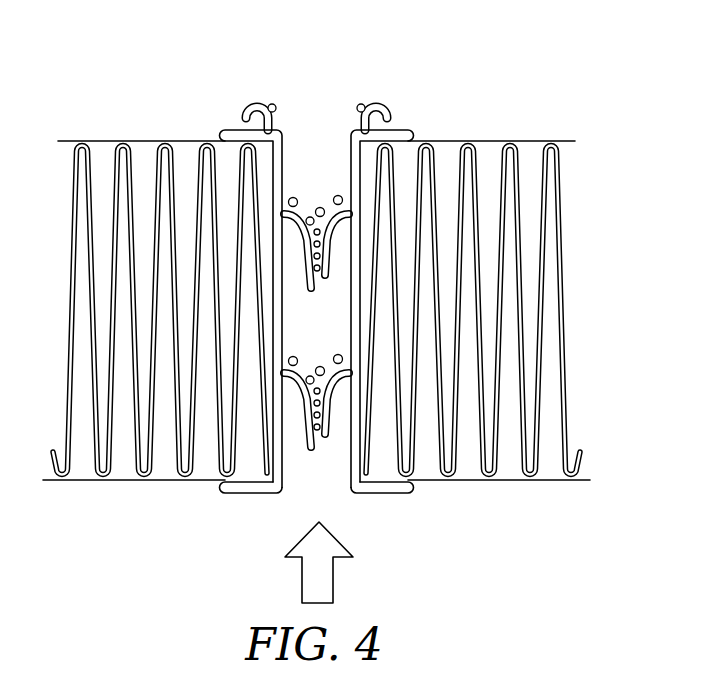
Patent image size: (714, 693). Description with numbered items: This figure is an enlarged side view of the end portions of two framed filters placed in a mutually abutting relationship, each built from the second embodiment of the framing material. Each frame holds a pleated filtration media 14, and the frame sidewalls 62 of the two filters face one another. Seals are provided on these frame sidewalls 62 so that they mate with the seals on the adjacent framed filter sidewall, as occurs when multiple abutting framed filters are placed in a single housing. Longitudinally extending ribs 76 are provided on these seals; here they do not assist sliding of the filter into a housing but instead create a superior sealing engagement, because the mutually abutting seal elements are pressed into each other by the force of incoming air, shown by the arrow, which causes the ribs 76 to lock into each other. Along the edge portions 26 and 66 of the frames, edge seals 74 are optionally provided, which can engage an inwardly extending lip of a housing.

The pleated filtration media 14 is at (163, 140).
The edge portion 26 is at (223, 131).
The frame sidewall 62 is at (287, 456).
The edge portion 66 is at (245, 495).
The edge seal 74 is at (257, 102).
The longitudinally extending rib 76 is at (358, 105).